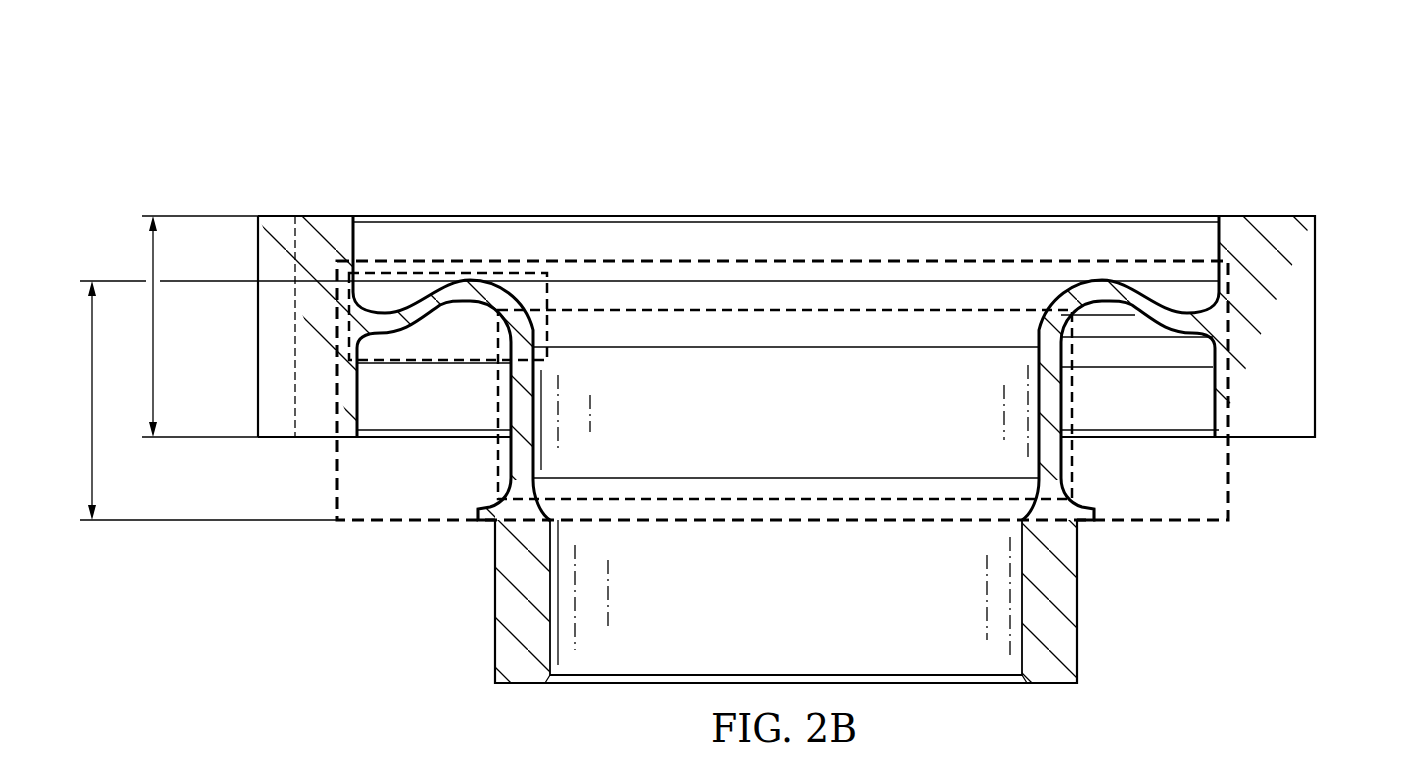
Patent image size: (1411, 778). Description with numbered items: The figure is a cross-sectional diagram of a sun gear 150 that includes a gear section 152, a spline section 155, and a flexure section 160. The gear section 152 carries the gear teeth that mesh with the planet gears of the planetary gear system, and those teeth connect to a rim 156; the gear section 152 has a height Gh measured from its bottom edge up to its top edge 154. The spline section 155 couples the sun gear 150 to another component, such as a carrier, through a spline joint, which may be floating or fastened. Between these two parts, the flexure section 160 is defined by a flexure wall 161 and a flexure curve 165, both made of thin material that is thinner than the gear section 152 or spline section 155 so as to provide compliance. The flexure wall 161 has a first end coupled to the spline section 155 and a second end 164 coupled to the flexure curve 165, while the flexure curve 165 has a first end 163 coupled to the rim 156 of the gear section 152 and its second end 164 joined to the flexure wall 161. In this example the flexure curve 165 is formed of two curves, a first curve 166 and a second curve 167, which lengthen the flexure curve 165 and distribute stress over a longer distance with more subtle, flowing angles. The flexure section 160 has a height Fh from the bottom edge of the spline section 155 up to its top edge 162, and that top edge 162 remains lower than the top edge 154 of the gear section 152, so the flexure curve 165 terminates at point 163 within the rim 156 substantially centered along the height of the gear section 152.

The sun gear 150 is at (734, 356).
The gear section 152 is at (783, 322).
The top edge of gear section 154 is at (321, 216).
The spline section 155 is at (257, 259).
The rim 156 is at (305, 397).
The flexure section 160 is at (782, 370).
The flexure wall 161 is at (676, 310).
The top edge of flexure section 162 is at (118, 281).
The first end of flexure curve 163 is at (374, 328).
The second end of flexure curve 164 is at (553, 323).
The flexure curve 165 is at (490, 272).
The first curve 166 is at (393, 305).
The second curve 167 is at (470, 302).